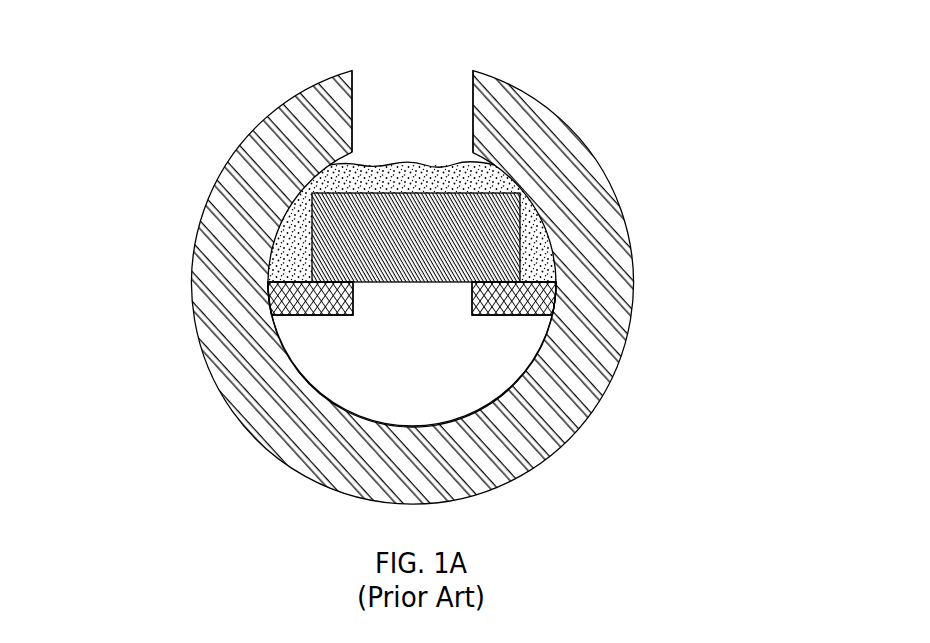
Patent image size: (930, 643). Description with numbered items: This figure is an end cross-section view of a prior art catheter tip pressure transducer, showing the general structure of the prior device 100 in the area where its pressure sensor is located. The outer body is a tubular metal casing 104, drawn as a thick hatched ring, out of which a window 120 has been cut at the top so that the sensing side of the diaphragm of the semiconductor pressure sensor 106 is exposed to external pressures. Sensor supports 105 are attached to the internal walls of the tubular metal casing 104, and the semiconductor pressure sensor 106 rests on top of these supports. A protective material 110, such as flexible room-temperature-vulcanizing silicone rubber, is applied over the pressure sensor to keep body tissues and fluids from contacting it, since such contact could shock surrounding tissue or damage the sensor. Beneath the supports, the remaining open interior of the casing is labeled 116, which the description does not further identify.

The prior catheter tip measurement device 100 is at (124, 83).
The tubular metal casing 104 is at (443, 288).
The sensor supports 105 is at (300, 317).
The semiconductor pressure sensor 106 is at (487, 206).
The protective material 110 is at (457, 188).
The cavity 116 is at (437, 388).
The window 120 is at (430, 90).